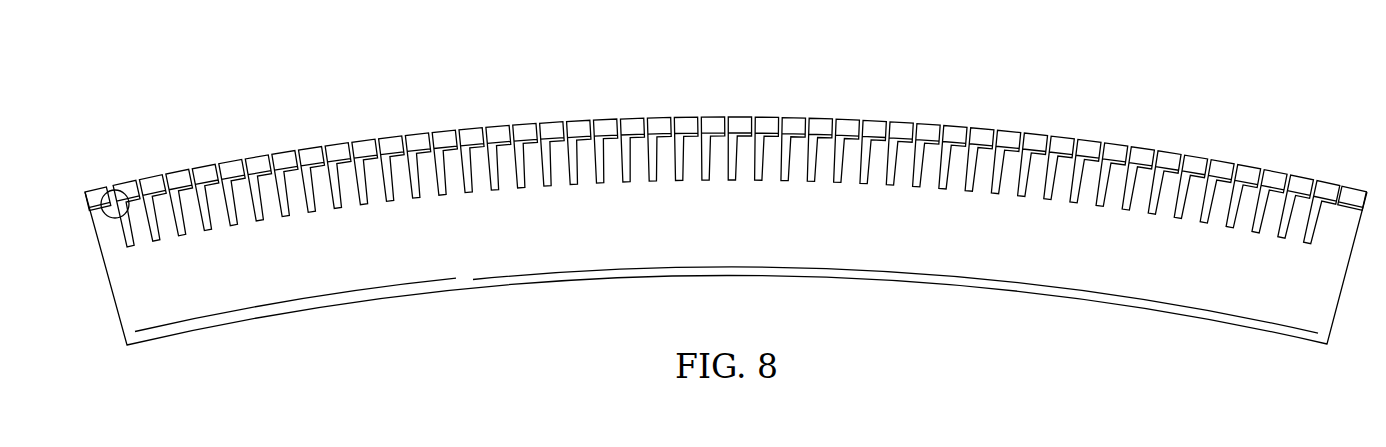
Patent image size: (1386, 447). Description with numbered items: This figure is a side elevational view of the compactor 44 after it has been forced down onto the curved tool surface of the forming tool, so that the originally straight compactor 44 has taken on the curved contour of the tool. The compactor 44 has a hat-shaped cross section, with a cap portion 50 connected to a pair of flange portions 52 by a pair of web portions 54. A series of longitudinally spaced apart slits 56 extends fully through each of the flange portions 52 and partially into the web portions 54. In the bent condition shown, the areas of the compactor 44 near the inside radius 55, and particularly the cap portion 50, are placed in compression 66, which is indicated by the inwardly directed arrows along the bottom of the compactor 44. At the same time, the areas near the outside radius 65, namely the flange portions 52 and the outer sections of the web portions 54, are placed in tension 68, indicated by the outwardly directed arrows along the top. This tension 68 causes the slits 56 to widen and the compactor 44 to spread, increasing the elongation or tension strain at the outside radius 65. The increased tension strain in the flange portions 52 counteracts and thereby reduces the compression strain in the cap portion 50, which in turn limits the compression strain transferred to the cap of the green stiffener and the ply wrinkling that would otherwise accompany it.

The compactor 44 is at (995, 68).
The cap portion 50 is at (172, 338).
The flange portions 52 is at (117, 190).
The web portions 54 is at (137, 311).
The inside radius 55 is at (877, 297).
The slits 56 is at (545, 123).
The outside radius 65 is at (858, 100).
The compression 66 is at (345, 332).
The tension 68 is at (328, 120).